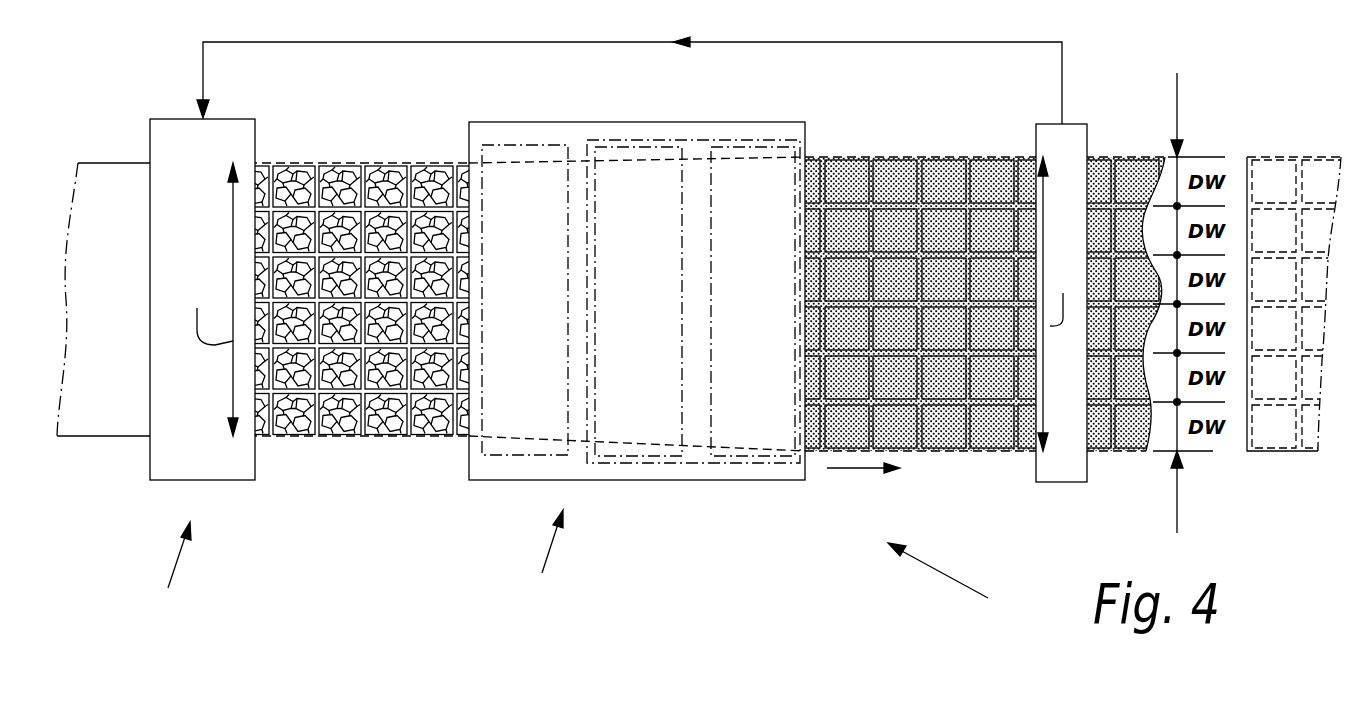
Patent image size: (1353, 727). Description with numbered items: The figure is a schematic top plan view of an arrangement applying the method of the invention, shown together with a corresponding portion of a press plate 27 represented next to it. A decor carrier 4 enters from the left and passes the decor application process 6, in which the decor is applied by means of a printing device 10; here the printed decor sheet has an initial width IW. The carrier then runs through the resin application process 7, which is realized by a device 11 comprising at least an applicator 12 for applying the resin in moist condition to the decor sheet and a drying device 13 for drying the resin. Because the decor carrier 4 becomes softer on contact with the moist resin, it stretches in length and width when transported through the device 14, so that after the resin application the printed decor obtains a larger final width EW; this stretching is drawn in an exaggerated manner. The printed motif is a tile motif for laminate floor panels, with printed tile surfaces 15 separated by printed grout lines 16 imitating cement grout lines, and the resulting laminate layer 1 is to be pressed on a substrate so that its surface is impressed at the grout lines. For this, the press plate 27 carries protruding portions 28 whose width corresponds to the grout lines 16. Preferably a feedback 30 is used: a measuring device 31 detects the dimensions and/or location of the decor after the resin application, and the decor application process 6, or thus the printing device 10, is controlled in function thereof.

The laminate layer 1 is at (973, 452).
The decor carrier 4 is at (112, 412).
The decor application process 6 is at (174, 569).
The resin application process 7 is at (637, 362).
The printing device 10 is at (206, 470).
The device 11 is at (756, 481).
The applicator 12 is at (522, 457).
The drying device 13 is at (678, 465).
The device 14 is at (950, 583).
The printed tile surfaces 15 is at (345, 183).
The printed grout lines 16 is at (363, 177).
The press plate 27 is at (1273, 173).
The protruding portions 28 is at (1298, 452).
The feedback 30 is at (742, 42).
The measuring device 31 is at (1071, 133).